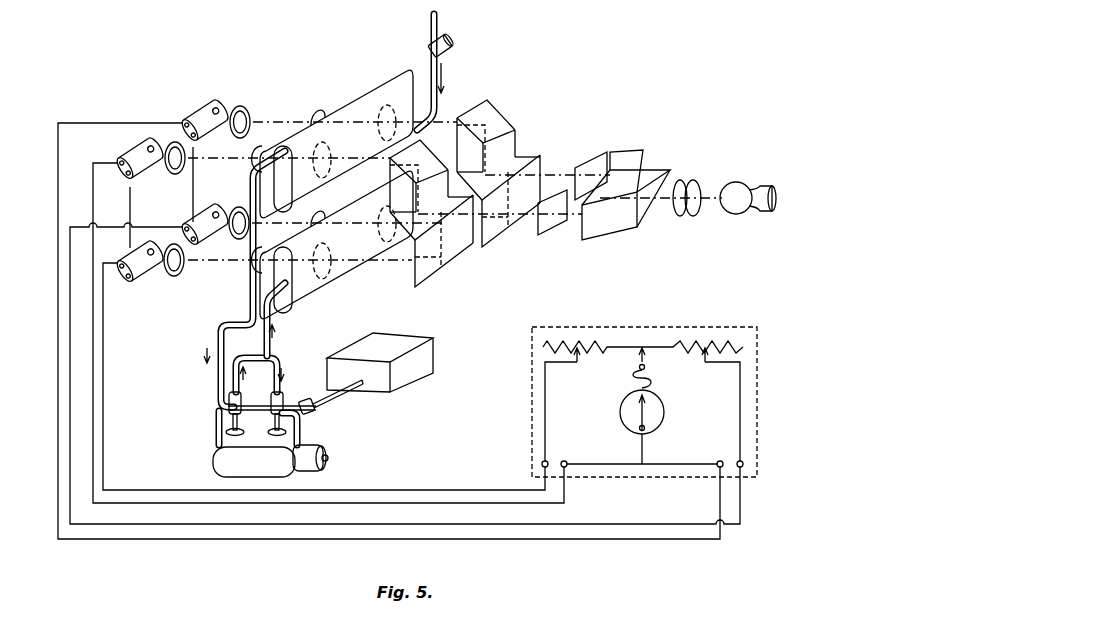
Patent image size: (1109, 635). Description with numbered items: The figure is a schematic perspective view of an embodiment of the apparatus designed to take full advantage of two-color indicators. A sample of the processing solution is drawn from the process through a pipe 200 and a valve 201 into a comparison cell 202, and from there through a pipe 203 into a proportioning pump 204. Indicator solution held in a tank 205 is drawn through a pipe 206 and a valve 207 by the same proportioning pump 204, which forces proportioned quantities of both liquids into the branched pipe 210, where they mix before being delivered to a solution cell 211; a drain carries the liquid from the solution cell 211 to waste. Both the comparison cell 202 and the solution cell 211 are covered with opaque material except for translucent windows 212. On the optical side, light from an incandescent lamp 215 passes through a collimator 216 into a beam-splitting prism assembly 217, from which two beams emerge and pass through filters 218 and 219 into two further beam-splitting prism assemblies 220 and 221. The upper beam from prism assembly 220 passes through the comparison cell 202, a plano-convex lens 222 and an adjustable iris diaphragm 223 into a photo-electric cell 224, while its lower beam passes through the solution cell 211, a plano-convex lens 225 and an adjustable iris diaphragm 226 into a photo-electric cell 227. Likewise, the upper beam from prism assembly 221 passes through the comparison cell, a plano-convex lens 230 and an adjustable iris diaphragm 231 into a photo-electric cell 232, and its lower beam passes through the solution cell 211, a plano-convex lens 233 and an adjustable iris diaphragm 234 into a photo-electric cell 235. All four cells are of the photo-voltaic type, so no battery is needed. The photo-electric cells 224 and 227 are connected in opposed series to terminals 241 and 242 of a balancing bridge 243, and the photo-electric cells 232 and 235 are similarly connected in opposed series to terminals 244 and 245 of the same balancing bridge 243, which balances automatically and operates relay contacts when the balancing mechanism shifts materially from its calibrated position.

The pipe 200 is at (445, 14).
The valve 201 is at (452, 48).
The comparison cell 202 is at (393, 73).
The pipe 203 is at (213, 330).
The proportioning pump 204 is at (213, 450).
The tank 205 is at (405, 334).
The pipe 206 is at (330, 408).
The valve 207 is at (312, 414).
The branched pipe 210 is at (273, 352).
The solution cell 211 is at (313, 300).
The translucent windows 212 is at (325, 142).
The incandescent lamp 215 is at (738, 216).
The collimator 216 is at (692, 218).
The beam-splitting prism assembly 217 is at (630, 240).
The filter 218 is at (602, 151).
The filter 219 is at (559, 236).
The beam-splitting prism assembly 220 is at (529, 152).
The beam-splitting prism assembly 221 is at (476, 258).
The plano-convex lens 222 is at (318, 106).
The adjustable iris diaphragm 223 is at (247, 107).
The photo-electric cell 224 is at (213, 106).
The plano-convex lens 225 is at (318, 210).
The adjustable iris diaphragm 226 is at (236, 208).
The photo-electric cell 227 is at (184, 223).
The plano-convex lens 230 is at (262, 143).
The adjustable iris diaphragm 231 is at (173, 142).
The photo-electric cell 232 is at (133, 148).
The plano-convex lens 233 is at (258, 278).
The adjustable iris diaphragm 234 is at (174, 277).
The photo-electric cell 235 is at (126, 283).
The terminal 241 is at (718, 468).
The terminal 242 is at (741, 468).
The balancing bridge 243 is at (532, 378).
The terminal 244 is at (566, 468).
The terminal 245 is at (541, 465).